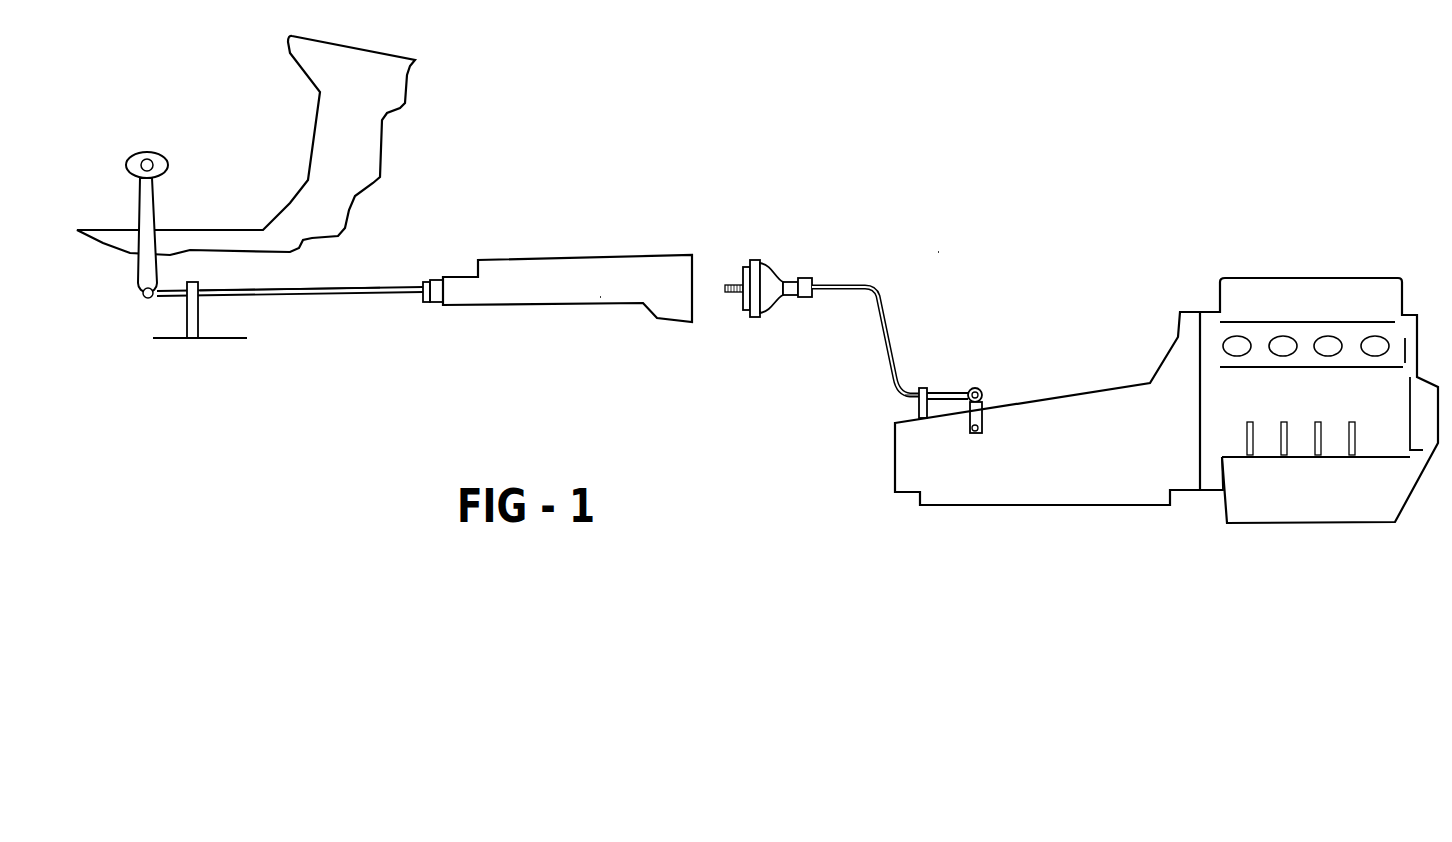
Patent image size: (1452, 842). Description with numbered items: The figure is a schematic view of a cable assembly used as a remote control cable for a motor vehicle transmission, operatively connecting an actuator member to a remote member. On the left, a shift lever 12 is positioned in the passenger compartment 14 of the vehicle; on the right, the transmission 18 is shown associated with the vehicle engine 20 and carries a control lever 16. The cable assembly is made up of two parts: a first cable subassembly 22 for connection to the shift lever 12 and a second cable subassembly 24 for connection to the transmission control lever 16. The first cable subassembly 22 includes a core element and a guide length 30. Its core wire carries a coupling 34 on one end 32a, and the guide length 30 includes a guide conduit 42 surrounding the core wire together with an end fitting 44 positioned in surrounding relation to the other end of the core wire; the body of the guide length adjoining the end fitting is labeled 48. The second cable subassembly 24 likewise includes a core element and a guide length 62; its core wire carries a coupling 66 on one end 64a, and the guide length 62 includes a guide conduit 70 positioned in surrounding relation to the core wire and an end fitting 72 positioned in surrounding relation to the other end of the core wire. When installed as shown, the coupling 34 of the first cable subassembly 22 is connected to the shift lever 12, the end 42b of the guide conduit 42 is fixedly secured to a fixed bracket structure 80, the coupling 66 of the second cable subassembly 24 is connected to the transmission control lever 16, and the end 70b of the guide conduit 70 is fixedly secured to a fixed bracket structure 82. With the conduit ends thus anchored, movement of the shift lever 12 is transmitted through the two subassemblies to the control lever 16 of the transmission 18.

The shift lever 12 is at (153, 152).
The passenger compartment 14 is at (357, 139).
The control lever 16 is at (977, 420).
The transmission 18 is at (968, 493).
The vehicle engine 20 is at (1323, 499).
The first cable subassembly 22 is at (387, 289).
The second cable subassembly 24 is at (938, 252).
The guide length 30 is at (567, 278).
The end of core wire 32a is at (170, 300).
The coupling 34 is at (142, 298).
The guide conduit 42 is at (397, 293).
The end of guide conduit 42b is at (243, 295).
The end fitting 44 is at (617, 254).
The housing body 48 is at (601, 297).
The guide length 62 is at (868, 309).
The end of core wire 64a is at (940, 388).
The coupling 66 is at (987, 392).
The guide conduit 70 is at (885, 363).
The end of guide conduit 70b is at (907, 390).
The end fitting 72 is at (768, 259).
The fixed bracket structure 80 is at (198, 316).
The fixed bracket structure 82 is at (910, 407).